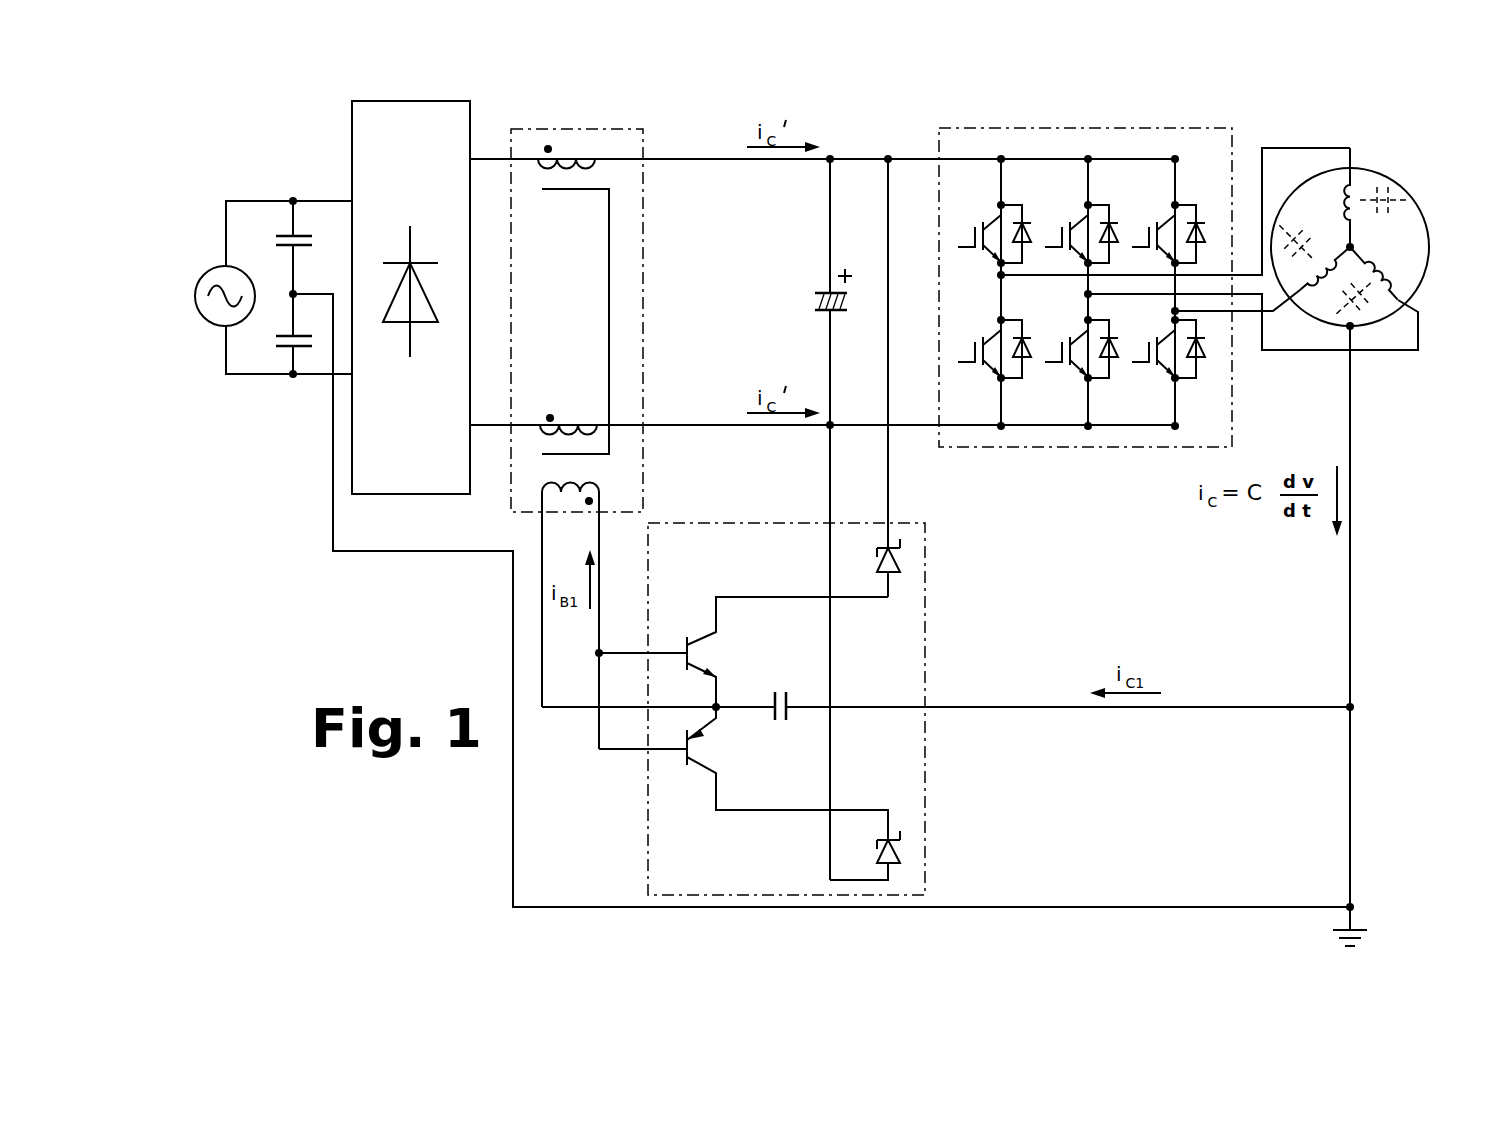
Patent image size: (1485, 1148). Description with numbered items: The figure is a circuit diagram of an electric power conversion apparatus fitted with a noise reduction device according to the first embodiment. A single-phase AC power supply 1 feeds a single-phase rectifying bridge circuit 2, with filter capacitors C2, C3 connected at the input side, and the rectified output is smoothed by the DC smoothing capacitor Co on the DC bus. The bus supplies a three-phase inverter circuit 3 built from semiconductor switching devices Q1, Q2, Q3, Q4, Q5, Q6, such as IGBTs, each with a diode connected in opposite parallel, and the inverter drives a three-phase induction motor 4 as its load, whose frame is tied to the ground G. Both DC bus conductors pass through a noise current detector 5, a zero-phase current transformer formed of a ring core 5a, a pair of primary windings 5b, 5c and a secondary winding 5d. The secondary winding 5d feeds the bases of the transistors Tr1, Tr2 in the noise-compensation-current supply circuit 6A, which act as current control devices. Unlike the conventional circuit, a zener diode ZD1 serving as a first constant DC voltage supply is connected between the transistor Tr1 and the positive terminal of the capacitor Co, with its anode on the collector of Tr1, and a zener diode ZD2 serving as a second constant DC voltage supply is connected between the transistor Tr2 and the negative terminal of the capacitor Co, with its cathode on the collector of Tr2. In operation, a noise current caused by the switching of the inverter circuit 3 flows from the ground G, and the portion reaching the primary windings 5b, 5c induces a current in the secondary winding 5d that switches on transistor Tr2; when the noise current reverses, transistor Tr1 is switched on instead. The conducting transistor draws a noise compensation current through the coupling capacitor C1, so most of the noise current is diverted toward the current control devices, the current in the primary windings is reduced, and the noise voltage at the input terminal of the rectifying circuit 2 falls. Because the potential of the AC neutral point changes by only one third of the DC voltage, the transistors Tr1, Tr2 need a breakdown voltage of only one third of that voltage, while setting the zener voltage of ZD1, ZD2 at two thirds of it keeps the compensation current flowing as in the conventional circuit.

The single-phase AC power supply 1 is at (212, 318).
The single-phase rectifying bridge circuit 2 is at (471, 119).
The three-phase inverter circuit 3 is at (1232, 131).
The three-phase induction motor 4 is at (1383, 180).
The noise current detector 5 is at (643, 131).
The ring core 5a is at (608, 264).
The primary winding 5b is at (598, 166).
The primary winding 5c is at (582, 421).
The secondary winding 5d is at (600, 480).
The noise-compensation-current supply circuit 6A is at (925, 651).
The coupling capacitor C1 is at (946, 722).
The filter capacitor C2 is at (278, 244).
The filter capacitor C3 is at (278, 346).
The DC smoothing capacitor Co is at (819, 519).
The transistor Tr1 is at (741, 654).
The transistor Tr2 is at (743, 773).
The zener diode ZD1 is at (903, 566).
The zener diode ZD2 is at (903, 856).
The semiconductor switching device Q1 is at (993, 231).
The semiconductor switching device Q2 is at (993, 346).
The semiconductor switching device Q3 is at (1080, 231).
The semiconductor switching device Q4 is at (1080, 346).
The semiconductor switching device Q5 is at (1167, 231).
The semiconductor switching device Q6 is at (1167, 346).
The ground G is at (1364, 926).